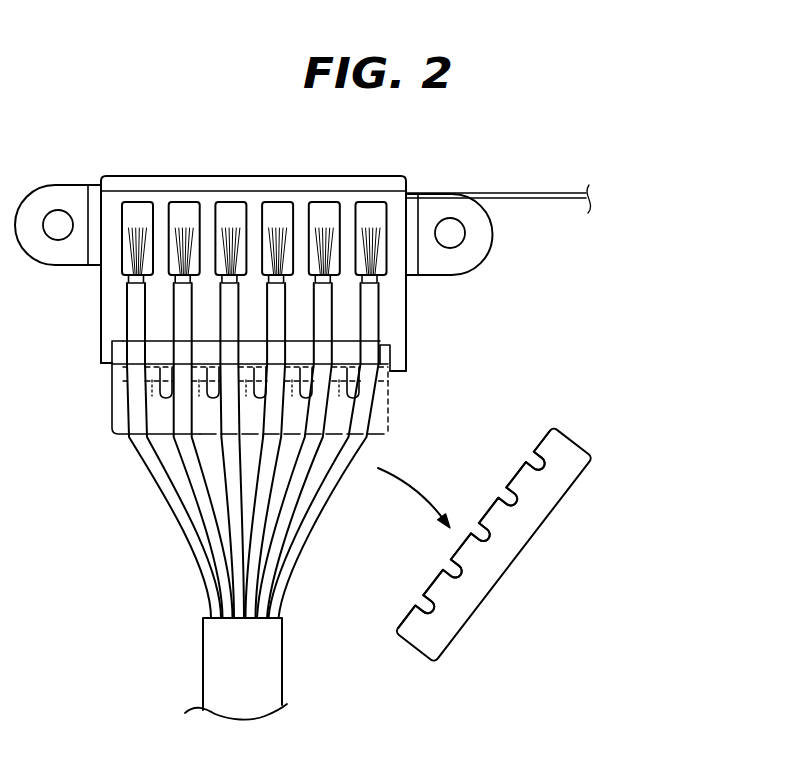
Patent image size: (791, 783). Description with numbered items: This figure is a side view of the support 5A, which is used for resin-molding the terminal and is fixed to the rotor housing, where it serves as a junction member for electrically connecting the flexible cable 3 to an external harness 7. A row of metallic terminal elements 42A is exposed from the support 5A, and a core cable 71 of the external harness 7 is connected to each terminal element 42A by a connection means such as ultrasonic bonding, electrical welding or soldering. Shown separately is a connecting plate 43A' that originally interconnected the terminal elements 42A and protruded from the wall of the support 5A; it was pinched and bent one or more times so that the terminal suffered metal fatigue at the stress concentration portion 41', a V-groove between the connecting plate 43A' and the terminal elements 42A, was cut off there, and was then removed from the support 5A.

The support 5A is at (137, 178).
The terminal element 42A is at (140, 210).
The core cable 71 is at (228, 263).
The flexible cable 3 is at (545, 203).
The stress concentration portion 41' is at (494, 512).
The connecting plate 43A' is at (544, 535).
The external harness 7 is at (260, 680).